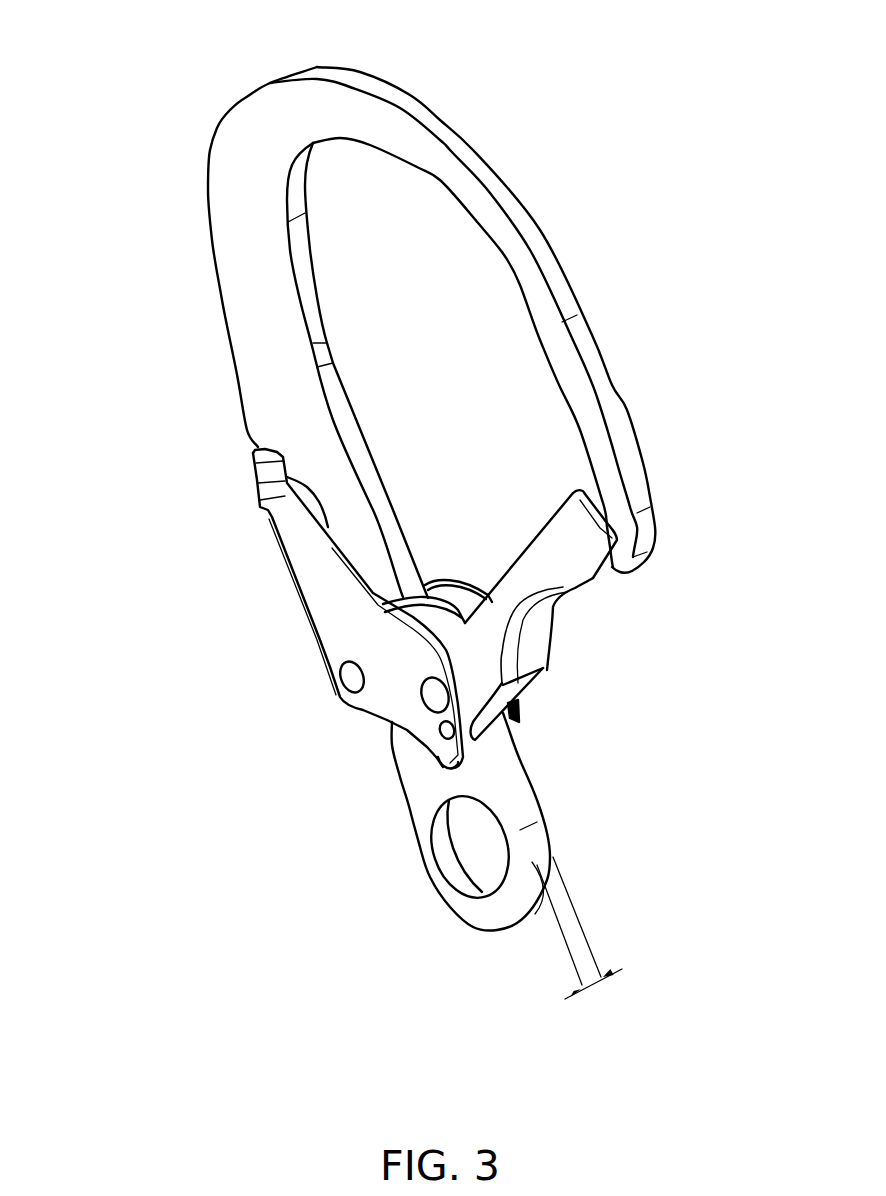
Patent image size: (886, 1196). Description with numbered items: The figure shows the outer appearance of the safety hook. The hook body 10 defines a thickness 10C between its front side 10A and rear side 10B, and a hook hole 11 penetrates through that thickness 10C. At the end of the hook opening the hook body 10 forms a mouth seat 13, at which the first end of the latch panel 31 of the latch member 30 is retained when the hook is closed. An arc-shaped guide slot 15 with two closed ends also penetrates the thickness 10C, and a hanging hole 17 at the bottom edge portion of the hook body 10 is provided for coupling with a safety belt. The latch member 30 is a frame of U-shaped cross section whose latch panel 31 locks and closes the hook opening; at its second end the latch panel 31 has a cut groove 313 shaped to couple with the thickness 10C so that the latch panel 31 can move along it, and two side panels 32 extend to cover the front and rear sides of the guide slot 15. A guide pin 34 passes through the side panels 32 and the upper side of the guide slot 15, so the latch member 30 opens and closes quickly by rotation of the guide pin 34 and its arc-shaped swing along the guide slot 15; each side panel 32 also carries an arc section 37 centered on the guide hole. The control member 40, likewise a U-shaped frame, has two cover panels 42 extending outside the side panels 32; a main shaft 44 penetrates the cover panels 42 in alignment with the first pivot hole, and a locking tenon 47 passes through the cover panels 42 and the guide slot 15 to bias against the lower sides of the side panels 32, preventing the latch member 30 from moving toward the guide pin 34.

The hook body 10 is at (207, 80).
The front side 10A is at (227, 243).
The rear side 10B is at (597, 351).
The thickness 10C is at (573, 928).
The hook hole 11 is at (422, 270).
The mouth seat 13 is at (627, 548).
The guide slot 15 is at (443, 771).
The hanging hole 17 is at (477, 853).
The latch member 30 is at (560, 667).
The latch panel 31 is at (542, 623).
The side panels 32 is at (535, 560).
The cut groove 313 is at (517, 713).
The guide pin 34 is at (432, 700).
The arc section 37 is at (411, 595).
The control member 40 is at (266, 576).
The cover panels 42 is at (382, 698).
The main shaft 44 is at (348, 668).
The locking tenon 47 is at (445, 737).